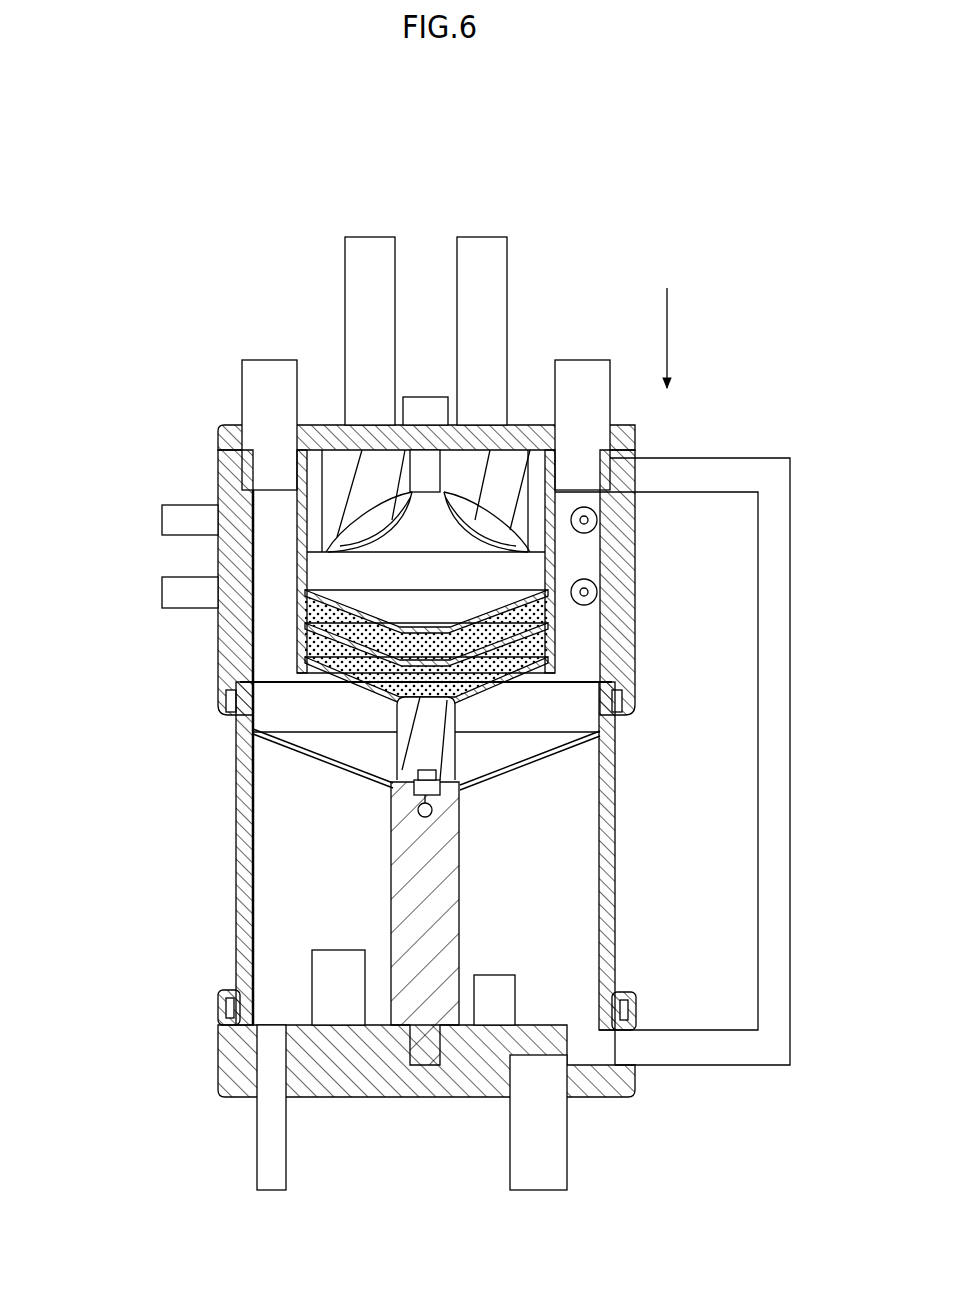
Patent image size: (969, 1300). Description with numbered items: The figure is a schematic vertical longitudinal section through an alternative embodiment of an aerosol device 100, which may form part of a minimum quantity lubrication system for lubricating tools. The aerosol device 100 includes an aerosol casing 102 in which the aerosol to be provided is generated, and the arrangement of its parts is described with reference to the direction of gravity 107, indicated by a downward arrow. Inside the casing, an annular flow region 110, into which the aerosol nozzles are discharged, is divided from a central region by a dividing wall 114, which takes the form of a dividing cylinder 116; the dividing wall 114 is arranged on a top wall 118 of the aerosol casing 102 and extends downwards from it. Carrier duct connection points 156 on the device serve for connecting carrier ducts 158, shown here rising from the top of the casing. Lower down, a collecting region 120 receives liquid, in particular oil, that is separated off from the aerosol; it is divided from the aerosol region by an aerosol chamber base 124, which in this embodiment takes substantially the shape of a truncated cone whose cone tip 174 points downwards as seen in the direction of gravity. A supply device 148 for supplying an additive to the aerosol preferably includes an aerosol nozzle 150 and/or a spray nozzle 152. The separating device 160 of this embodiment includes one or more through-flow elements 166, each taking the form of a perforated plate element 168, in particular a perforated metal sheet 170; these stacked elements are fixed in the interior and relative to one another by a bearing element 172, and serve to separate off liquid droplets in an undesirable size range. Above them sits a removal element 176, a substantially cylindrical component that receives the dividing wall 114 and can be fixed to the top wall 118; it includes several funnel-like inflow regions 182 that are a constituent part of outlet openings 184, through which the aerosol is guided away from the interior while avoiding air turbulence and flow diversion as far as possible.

The aerosol device 100 is at (619, 324).
The aerosol casing 102 is at (626, 590).
The direction of gravity 107 is at (668, 333).
The annular flow region 110 is at (287, 584).
The dividing wall 114 is at (302, 557).
The dividing cylinder 116 is at (200, 522).
The top wall 118 is at (522, 440).
The collecting region 120 is at (560, 958).
The aerosol chamber base 124 is at (563, 770).
The supply device 148 is at (418, 810).
The aerosol nozzle 150 is at (242, 814).
The spray nozzle 152 is at (238, 811).
The carrier duct connection point 156 is at (378, 440).
The carrier duct 158 is at (487, 257).
The separating device 160 is at (338, 689).
The through-flow element 166 is at (535, 660).
The perforated plate element 168 is at (308, 600).
The perforated metal sheet 170 is at (308, 630).
The bearing element 172 is at (408, 752).
The cone tip 174 is at (462, 790).
The removal element 176 is at (505, 476).
The funnel-like inflow region 182 is at (484, 520).
The outlet opening 184 is at (598, 521).